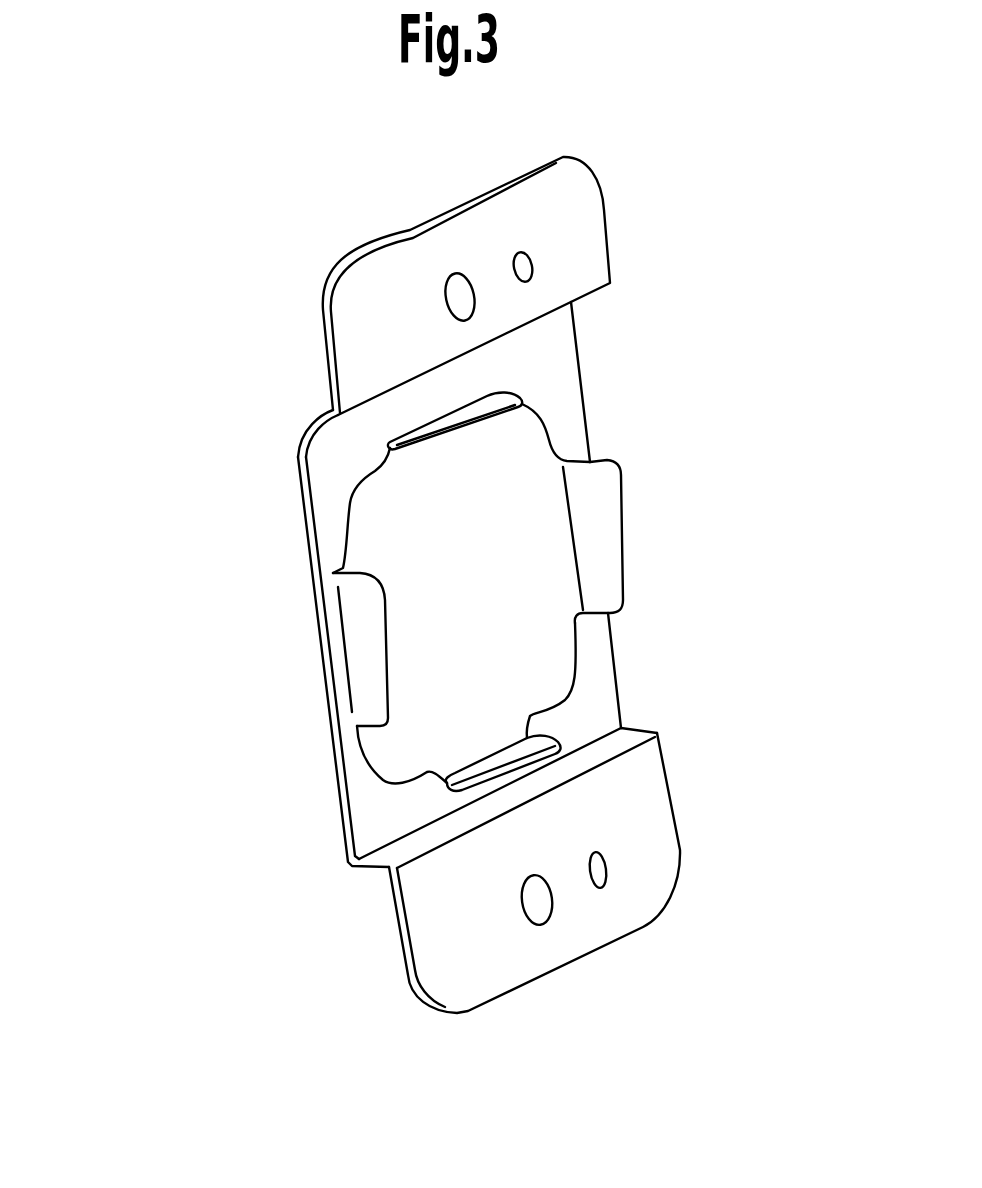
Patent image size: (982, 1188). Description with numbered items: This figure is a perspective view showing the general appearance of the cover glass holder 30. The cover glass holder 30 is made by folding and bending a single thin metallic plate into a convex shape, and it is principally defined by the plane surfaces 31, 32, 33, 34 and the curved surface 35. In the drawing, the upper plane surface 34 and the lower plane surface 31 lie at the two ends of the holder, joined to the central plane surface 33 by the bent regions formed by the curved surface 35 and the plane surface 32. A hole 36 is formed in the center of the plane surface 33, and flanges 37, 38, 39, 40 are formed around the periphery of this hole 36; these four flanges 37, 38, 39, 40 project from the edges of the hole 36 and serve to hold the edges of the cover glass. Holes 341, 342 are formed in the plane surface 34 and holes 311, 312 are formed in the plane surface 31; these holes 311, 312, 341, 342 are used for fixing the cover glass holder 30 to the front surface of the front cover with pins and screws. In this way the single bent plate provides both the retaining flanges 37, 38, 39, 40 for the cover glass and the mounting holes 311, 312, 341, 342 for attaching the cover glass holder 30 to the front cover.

The cover glass holder 30 is at (154, 316).
The plane surface 31 is at (619, 878).
The hole 311 is at (608, 872).
The hole 312 is at (552, 913).
The plane surface 32 is at (375, 873).
The plane surface 33 is at (464, 643).
The plane surface 34 is at (568, 273).
The hole 341 is at (517, 250).
The hole 342 is at (445, 285).
The curved surface 35 is at (313, 427).
The hole 36 is at (479, 574).
The flange 37 is at (497, 397).
The flange 38 is at (606, 536).
The flange 39 is at (557, 740).
The flange 40 is at (370, 665).